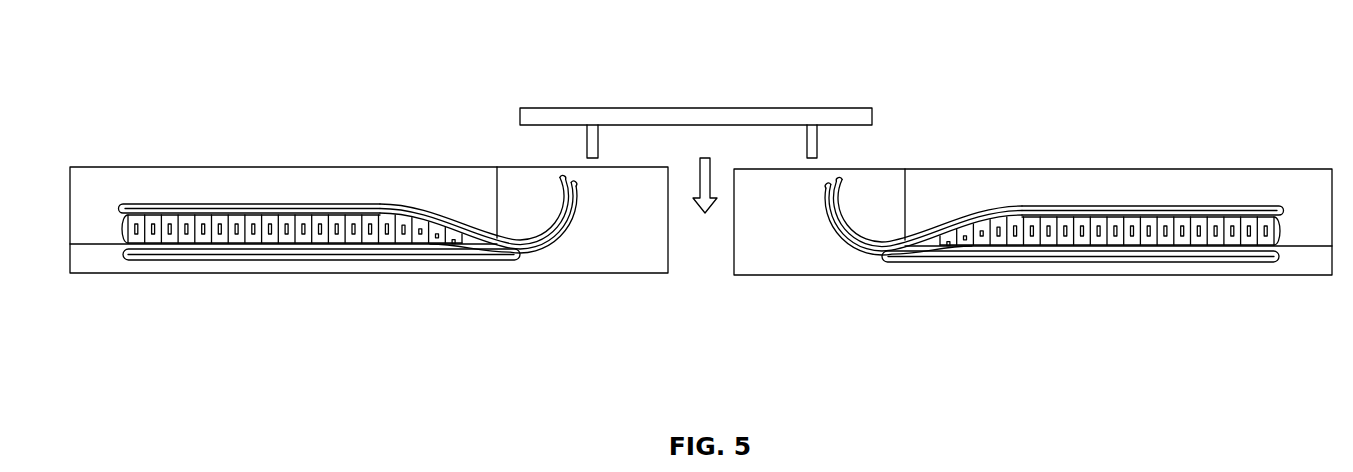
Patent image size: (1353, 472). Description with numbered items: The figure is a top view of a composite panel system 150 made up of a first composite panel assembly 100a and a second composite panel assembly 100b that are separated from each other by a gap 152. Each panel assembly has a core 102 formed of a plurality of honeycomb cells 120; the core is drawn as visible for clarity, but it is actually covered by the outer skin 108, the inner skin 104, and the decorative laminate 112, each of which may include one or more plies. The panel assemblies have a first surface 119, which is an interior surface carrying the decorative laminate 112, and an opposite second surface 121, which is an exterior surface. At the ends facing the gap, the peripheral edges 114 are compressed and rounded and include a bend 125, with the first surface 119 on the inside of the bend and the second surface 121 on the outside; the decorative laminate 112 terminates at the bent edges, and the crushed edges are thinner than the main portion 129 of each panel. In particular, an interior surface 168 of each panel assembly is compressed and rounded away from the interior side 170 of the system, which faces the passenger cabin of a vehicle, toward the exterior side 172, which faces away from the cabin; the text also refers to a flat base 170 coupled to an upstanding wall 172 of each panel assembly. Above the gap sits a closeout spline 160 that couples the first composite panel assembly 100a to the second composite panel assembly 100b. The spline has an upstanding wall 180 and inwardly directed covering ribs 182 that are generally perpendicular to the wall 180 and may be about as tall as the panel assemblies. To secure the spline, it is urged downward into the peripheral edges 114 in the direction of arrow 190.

The composite panel system 150 is at (178, 82).
The first composite panel assembly 100a is at (124, 204).
The second composite panel assembly 100b is at (1090, 195).
The core 102 is at (233, 223).
The inner skin 104 is at (422, 253).
The outer skin 108 is at (207, 213).
The decorative laminate 112 is at (352, 264).
The peripheral edge 114 is at (537, 252).
The first surface 119 is at (487, 253).
The honeycomb cells 120 is at (290, 222).
The second surface 121 is at (497, 167).
The bend 125 is at (547, 258).
The main portion 129 is at (345, 222).
The gap 152 is at (704, 288).
The closeout spline 160 is at (710, 102).
The interior surface 168 is at (565, 236).
The interior side 170 is at (622, 182).
The exterior side 172 is at (496, 102).
The upstanding wall 180 is at (733, 108).
The covering ribs 182 is at (600, 142).
The arrow 190 is at (712, 172).